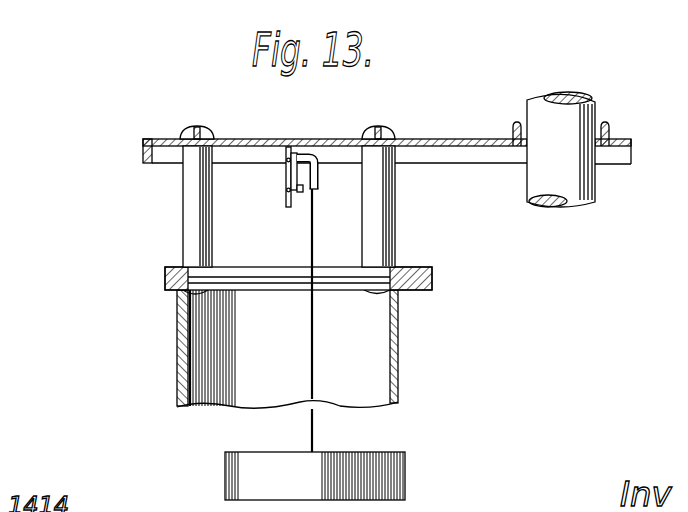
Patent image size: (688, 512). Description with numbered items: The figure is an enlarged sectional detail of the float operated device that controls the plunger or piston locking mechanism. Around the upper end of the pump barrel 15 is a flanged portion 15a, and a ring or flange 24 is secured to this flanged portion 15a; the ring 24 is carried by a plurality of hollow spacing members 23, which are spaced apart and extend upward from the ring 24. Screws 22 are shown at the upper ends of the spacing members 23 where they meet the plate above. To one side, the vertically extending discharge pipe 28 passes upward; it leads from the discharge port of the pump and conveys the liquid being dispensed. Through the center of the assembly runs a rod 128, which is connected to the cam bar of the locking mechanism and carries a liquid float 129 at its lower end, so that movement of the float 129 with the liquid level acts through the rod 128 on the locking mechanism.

The pump barrel 15 is at (180, 309).
The flanged portion 15a is at (456, 298).
The screw 22 is at (203, 131).
The hollow spacing members 23 is at (207, 198).
The ring or flange 24 is at (411, 268).
The discharge pipe 28 is at (582, 177).
The rod 128 is at (312, 346).
The liquid float 129 is at (278, 465).